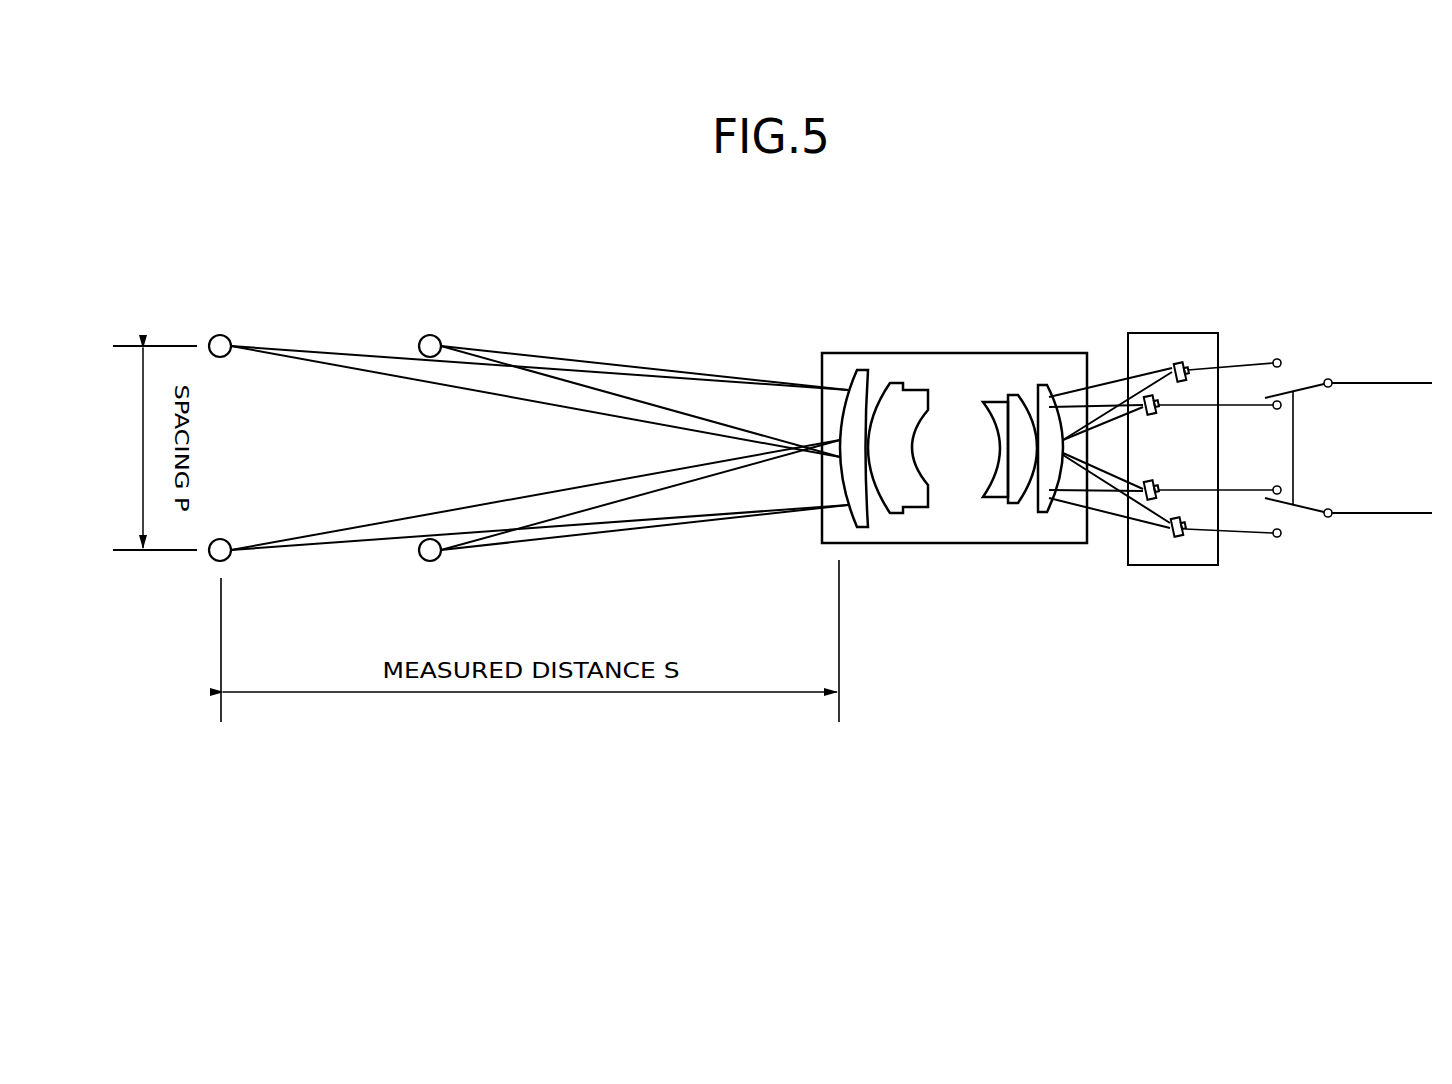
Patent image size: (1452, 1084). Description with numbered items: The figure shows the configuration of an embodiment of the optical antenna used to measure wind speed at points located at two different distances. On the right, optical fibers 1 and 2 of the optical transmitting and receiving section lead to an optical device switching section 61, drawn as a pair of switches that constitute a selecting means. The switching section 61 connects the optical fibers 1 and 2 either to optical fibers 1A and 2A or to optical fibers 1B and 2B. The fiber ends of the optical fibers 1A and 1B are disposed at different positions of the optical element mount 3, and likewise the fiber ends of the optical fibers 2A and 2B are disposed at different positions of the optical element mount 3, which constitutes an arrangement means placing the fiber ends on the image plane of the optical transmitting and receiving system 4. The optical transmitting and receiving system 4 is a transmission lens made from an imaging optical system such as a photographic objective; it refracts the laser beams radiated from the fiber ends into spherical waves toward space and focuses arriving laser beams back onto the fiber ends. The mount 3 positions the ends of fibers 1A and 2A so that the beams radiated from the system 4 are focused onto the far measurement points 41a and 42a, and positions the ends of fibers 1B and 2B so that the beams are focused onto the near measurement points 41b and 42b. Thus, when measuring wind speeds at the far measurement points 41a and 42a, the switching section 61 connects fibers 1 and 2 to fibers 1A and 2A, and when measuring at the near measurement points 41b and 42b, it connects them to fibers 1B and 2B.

The far measurement point 42a is at (220, 336).
The near measurement point 42b is at (430, 336).
The far measurement point 41a is at (220, 540).
The near measurement point 41b is at (430, 561).
The optical transmitting and receiving system 4 is at (966, 352).
The optical element mount 3 is at (1141, 333).
The optical fiber 1B is at (1214, 366).
The optical fiber 1A is at (1251, 403).
The optical fiber 2A is at (1250, 493).
The optical fiber 2B is at (1200, 536).
The optical device switching section 61 is at (1293, 370).
The optical fiber 1 is at (1418, 383).
The optical fiber 2 is at (1418, 513).